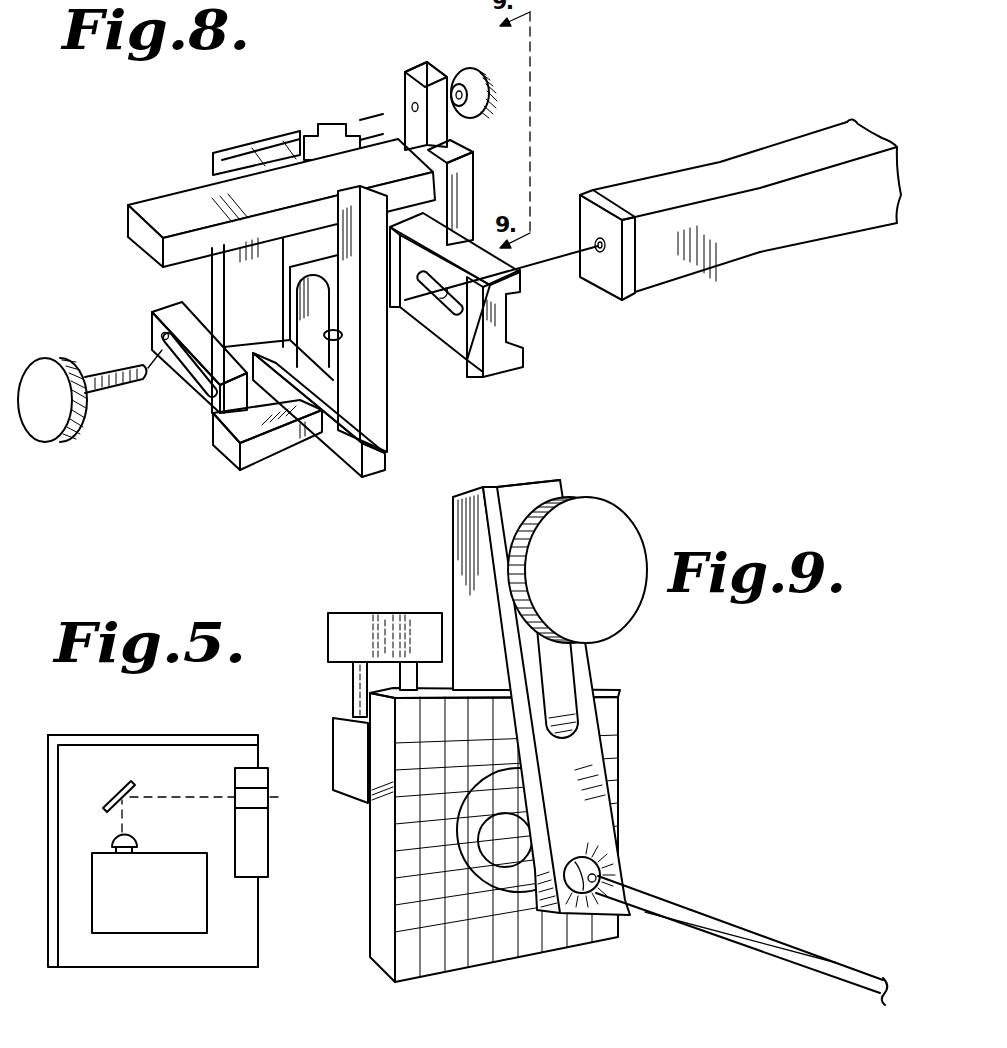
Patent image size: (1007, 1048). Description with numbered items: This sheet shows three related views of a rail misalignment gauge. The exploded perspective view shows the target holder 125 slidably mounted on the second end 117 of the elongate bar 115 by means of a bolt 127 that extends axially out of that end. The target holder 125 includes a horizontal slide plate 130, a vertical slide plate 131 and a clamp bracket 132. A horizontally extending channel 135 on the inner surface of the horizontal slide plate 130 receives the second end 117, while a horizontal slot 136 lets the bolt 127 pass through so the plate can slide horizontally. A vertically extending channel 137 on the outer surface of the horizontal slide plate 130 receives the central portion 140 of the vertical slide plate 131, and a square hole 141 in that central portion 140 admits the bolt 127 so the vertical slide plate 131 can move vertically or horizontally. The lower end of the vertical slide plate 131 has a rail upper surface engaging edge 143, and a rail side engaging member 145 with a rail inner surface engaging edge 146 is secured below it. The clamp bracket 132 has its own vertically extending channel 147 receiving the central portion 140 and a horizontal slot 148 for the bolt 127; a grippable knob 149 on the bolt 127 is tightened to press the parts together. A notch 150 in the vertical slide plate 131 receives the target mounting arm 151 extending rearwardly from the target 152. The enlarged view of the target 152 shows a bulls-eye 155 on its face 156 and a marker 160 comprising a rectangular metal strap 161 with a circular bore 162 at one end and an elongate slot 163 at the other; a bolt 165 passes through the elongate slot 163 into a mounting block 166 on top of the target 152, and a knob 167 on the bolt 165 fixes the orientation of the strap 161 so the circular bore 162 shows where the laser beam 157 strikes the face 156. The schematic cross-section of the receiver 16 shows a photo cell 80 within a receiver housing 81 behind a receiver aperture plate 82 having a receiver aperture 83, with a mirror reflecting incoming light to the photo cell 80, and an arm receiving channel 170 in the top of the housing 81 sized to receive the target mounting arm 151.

In FIG. 8, the target holder 125 is at (125, 142).
In FIG. 8, the target mounting arm 151 is at (148, 202).
In FIG. 8, the notch 150 is at (318, 207).
In FIG. 8, the marker 160 is at (436, 62).
In FIG. 9, the marker 160 is at (610, 747).
In FIG. 8, the bolt 165 is at (405, 107).
In FIG. 8, the knob 167 is at (491, 85).
In FIG. 9, the knob 167 is at (612, 528).
In FIG. 8, the target 152 is at (480, 156).
In FIG. 8, the horizontal slide plate 130 is at (503, 372).
In FIG. 8, the horizontally extending channel 135 is at (515, 296).
In FIG. 8, the horizontal slot 136 is at (447, 297).
In FIG. 8, the vertically extending channel 137 is at (463, 362).
In FIG. 8, the central portion 140 is at (352, 398).
In FIG. 8, the square hole 141 is at (340, 340).
In FIG. 8, the rail upper surface engaging edge 143 is at (333, 453).
In FIG. 8, the vertical slide plate 131 is at (387, 452).
In FIG. 8, the rail side engaging member 145 is at (227, 453).
In FIG. 8, the rail inner surface engaging edge 146 is at (253, 458).
In FIG. 8, the vertically extending channel 147 is at (190, 317).
In FIG. 8, the horizontal slot 148 is at (160, 337).
In FIG. 8, the clamp bracket 132 is at (185, 387).
In FIG. 8, the bolt 127 is at (113, 370).
In FIG. 8, the grippable knob 149 is at (63, 442).
In FIG. 8, the elongate bar 115 is at (798, 152).
In FIG. 8, the second end 117 is at (645, 290).
In FIG. 9, the face 156 is at (433, 958).
In FIG. 9, the bulls-eye 155 is at (547, 837).
In FIG. 9, the mounting block 166 is at (472, 597).
In FIG. 9, the rectangular metal strap 161 is at (557, 482).
In FIG. 9, the elongate slot 163 is at (562, 670).
In FIG. 9, the circular bore 162 is at (620, 871).
In FIG. 9, the laser beam 157 is at (781, 935).
In FIG. 5, the receiver 16 is at (50, 733).
In FIG. 5, the arm receiving channel 170 is at (180, 740).
In FIG. 5, the photo cell 80 is at (208, 907).
In FIG. 5, the receiver aperture plate 82 is at (267, 877).
In FIG. 5, the receiver aperture 83 is at (257, 793).
In FIG. 5, the receiver housing 81 is at (245, 953).